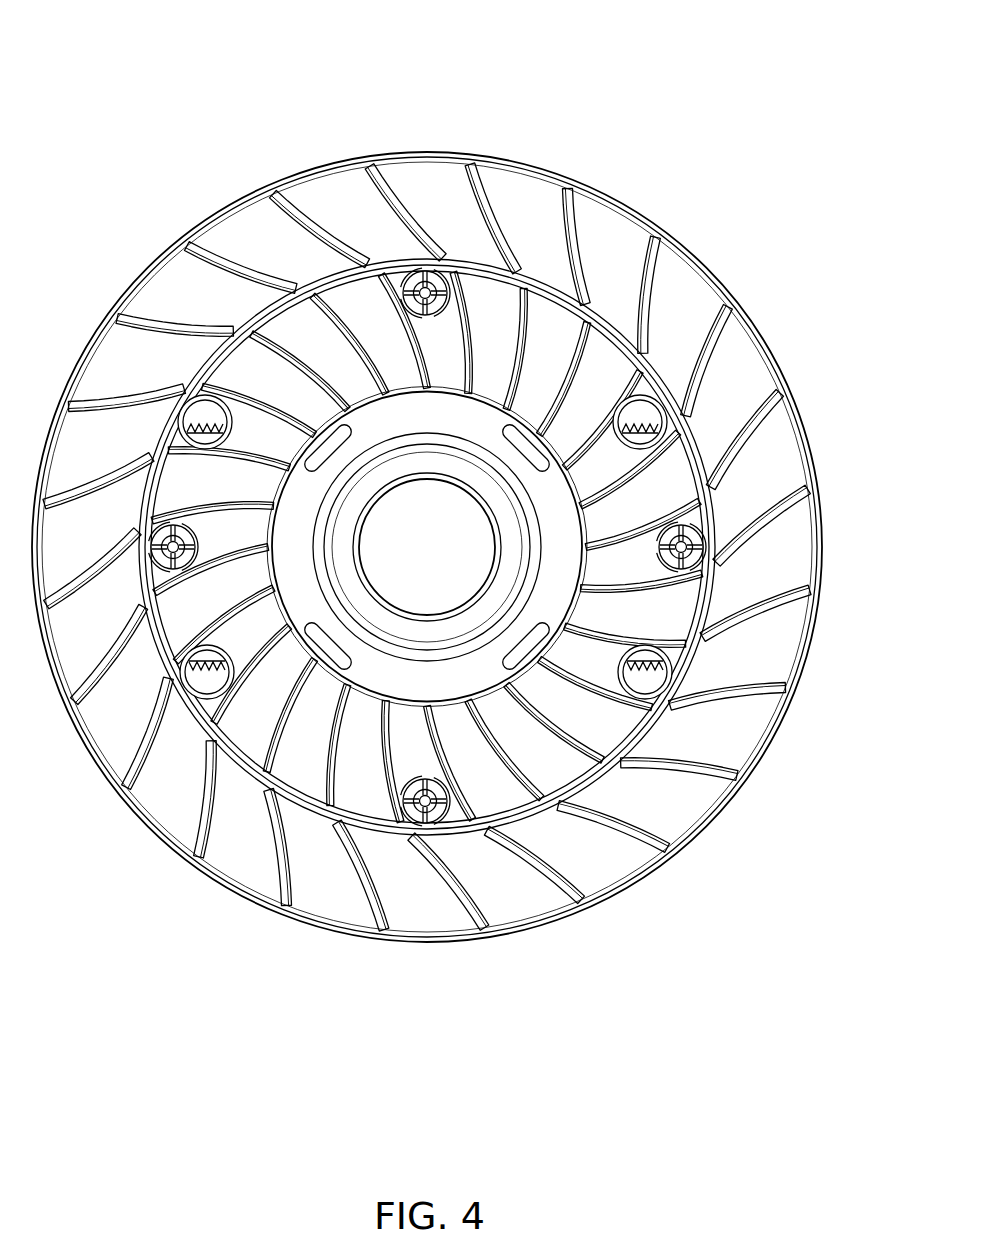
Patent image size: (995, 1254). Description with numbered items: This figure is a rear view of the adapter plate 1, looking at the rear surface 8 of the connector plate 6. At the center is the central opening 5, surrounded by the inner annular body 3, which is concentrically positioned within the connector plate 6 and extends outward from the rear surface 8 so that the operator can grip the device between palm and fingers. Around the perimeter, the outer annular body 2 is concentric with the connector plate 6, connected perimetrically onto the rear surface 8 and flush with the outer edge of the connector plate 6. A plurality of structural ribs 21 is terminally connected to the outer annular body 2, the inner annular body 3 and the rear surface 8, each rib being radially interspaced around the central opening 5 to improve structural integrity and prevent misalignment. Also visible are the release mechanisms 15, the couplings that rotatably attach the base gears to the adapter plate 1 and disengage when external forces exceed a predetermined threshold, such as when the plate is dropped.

The adapter plate 1 is at (437, 130).
The outer annular body 2 is at (623, 206).
The inner annular body 3 is at (202, 357).
The central opening 5 is at (372, 544).
The connector plate 6 is at (776, 650).
The rear surface 8 is at (550, 249).
The release mechanism 15 is at (447, 292).
The structural ribs 21 is at (396, 208).